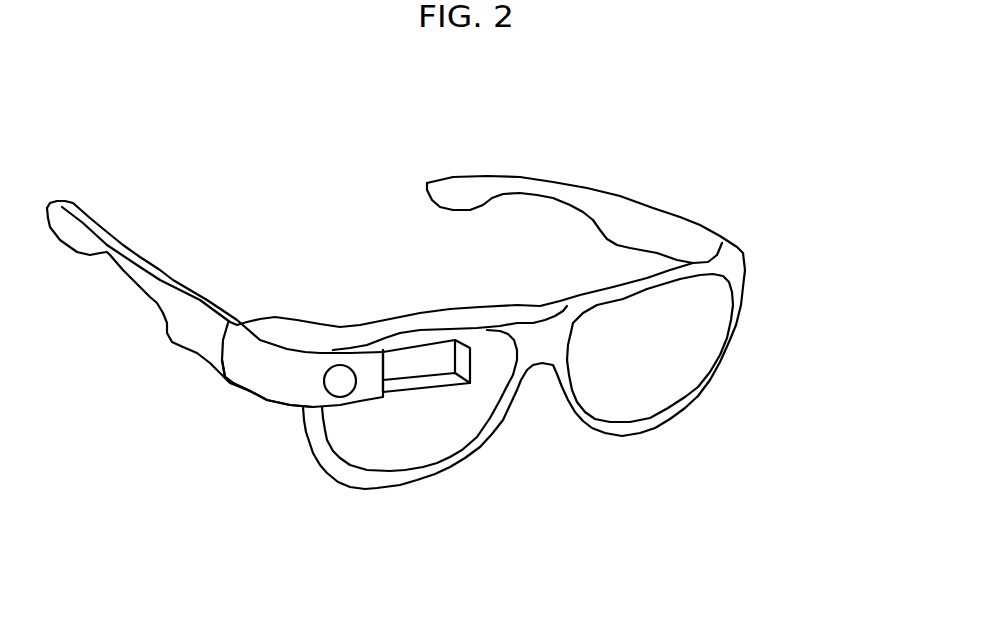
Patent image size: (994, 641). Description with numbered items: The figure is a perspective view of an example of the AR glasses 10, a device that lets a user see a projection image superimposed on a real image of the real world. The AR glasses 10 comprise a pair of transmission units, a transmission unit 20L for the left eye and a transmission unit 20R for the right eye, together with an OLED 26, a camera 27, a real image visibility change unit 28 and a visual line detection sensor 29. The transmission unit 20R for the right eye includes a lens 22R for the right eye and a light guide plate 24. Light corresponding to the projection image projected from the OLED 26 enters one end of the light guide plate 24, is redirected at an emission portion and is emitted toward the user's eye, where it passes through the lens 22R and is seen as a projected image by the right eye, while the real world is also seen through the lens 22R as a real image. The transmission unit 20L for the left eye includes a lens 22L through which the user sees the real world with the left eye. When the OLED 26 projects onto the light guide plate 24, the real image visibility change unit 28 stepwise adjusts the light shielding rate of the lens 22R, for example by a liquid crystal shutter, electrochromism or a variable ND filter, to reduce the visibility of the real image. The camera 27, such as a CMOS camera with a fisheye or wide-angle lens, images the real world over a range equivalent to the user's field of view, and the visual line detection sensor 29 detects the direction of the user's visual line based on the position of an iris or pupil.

The AR glasses 10 is at (437, 229).
The transmission unit for a left eye 20L is at (639, 408).
The transmission unit for a right eye 20R is at (418, 490).
The lens for a left eye 22L is at (650, 383).
The lens for a right eye 22R is at (419, 436).
The light guide plate 24 is at (424, 325).
The organic light emitting diode (OLED) 26 is at (302, 321).
The camera 27 is at (334, 333).
The real image visibility change unit 28 is at (450, 304).
The visual line detection sensor 29 is at (267, 422).